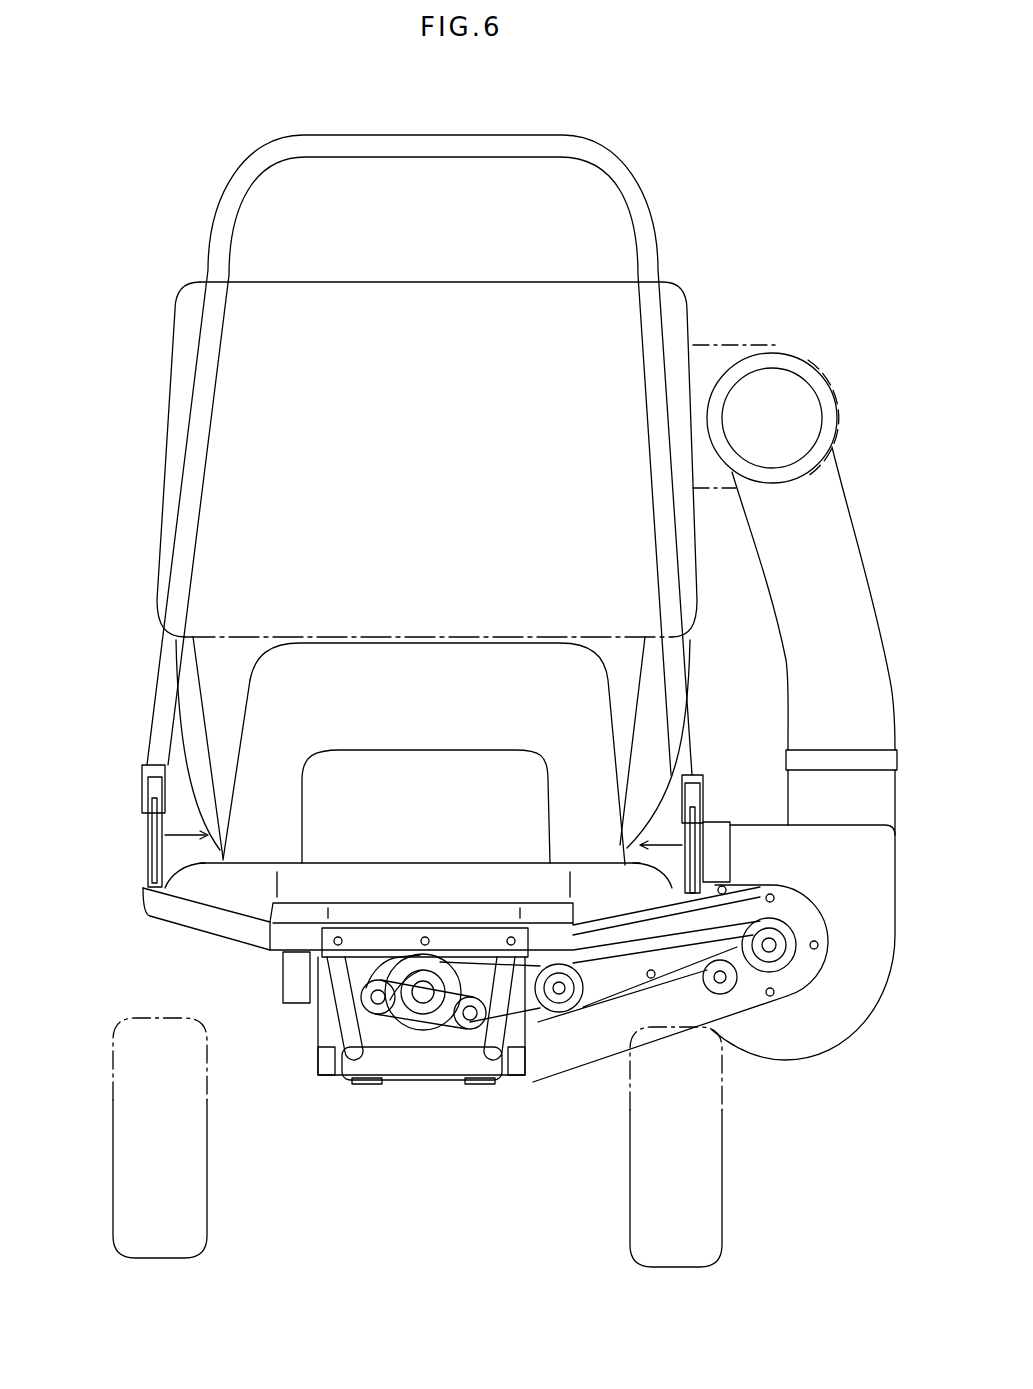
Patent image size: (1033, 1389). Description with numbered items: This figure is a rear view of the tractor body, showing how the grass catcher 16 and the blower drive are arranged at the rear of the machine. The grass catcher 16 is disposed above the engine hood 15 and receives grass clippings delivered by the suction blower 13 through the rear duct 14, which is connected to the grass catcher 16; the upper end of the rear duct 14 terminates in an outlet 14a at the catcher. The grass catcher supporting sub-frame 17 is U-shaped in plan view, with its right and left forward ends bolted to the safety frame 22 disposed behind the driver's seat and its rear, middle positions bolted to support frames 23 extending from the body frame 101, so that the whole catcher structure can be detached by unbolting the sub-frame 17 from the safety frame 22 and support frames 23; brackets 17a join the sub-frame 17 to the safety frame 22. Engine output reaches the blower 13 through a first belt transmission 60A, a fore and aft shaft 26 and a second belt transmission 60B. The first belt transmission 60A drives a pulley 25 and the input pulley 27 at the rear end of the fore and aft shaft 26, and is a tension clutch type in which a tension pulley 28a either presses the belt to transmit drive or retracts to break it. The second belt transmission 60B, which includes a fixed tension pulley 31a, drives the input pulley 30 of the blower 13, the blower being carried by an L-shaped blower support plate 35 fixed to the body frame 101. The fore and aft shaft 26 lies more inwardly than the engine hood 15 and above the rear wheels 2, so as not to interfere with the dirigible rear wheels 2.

The rear wheels 2 is at (207, 1163).
The suction blower 13 is at (867, 1017).
The rear duct 14 is at (856, 540).
The exhaust outlet 14a is at (776, 352).
The engine hood 15 is at (426, 648).
The grass catcher 16 is at (405, 282).
The grass catcher supporting sub-frame 17 is at (232, 925).
The bracket 17a is at (143, 855).
The safety frame 22 is at (643, 200).
The support frames 23 is at (343, 1015).
The drive pulley 25 is at (413, 973).
The fore and aft shaft 26 is at (583, 1000).
The input pulley 27 is at (563, 992).
The tension pulley 28a is at (468, 1027).
The input pulley 30 is at (785, 925).
The fixed tension pulley 31a is at (733, 985).
The blower support plate 35 is at (730, 1013).
The first belt transmission 60A is at (472, 958).
The second belt transmission 60B is at (635, 995).
The body frame 101 is at (330, 1077).